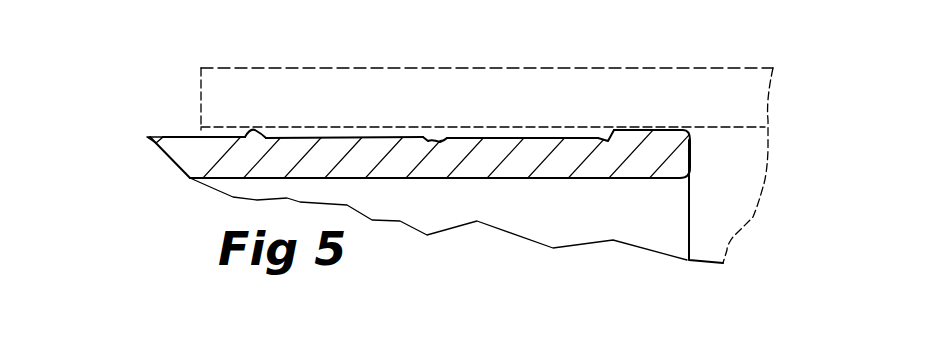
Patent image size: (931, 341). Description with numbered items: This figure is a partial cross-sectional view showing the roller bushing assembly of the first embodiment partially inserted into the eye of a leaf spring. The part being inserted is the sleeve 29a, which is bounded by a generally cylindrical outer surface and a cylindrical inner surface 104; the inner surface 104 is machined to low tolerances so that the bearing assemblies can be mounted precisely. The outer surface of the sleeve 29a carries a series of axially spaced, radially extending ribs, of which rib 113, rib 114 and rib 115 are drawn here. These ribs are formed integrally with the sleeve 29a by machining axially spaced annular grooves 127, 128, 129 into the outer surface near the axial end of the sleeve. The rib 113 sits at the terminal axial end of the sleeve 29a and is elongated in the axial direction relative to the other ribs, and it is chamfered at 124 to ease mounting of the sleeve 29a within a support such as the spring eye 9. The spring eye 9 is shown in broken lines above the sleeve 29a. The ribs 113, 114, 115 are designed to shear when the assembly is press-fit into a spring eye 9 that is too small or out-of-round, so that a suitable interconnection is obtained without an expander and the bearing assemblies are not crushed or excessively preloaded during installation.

The spring eye 9 is at (722, 68).
The sleeve 29a is at (155, 158).
The inner surface 104 is at (583, 178).
The rib 113 is at (631, 128).
The rib 114 is at (448, 138).
The rib 115 is at (250, 128).
The chamfer 124 is at (692, 139).
The annular groove 127 is at (497, 140).
The annular groove 128 is at (297, 137).
The annular groove 129 is at (163, 137).